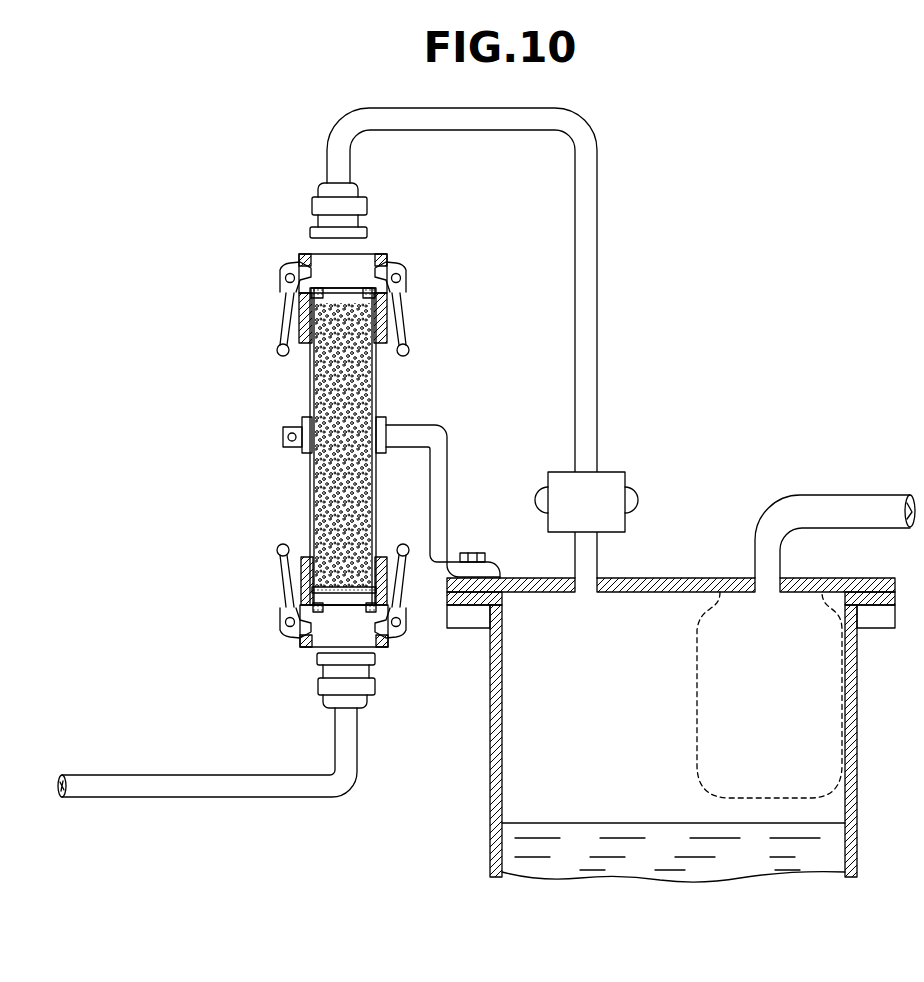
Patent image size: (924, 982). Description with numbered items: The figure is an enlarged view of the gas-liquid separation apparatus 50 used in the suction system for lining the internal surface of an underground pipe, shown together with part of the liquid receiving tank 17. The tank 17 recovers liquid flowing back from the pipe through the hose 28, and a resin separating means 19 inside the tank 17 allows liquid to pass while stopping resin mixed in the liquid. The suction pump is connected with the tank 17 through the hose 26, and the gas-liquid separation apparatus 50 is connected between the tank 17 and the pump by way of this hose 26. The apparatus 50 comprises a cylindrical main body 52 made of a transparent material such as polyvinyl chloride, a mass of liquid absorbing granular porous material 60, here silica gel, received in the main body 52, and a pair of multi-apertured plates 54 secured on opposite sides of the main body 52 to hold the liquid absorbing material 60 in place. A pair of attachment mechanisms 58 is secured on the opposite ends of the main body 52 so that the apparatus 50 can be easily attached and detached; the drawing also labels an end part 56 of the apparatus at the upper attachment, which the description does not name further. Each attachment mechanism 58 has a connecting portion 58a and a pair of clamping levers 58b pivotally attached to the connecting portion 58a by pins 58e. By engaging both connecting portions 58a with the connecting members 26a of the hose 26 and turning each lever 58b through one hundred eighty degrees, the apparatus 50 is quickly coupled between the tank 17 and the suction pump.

The liquid receiving tank 17 is at (677, 577).
The resin separating means 19 is at (827, 728).
The hose 26 is at (588, 200).
The connecting member 26a is at (312, 230).
The hose 28 is at (872, 505).
The gas-liquid separation apparatus 50 is at (203, 380).
The cylindrical main body 52 is at (295, 446).
The multi-apertured plate 54 is at (313, 335).
The coupling sleeve 56 is at (337, 290).
The attachment mechanism 58 is at (429, 462).
The connecting portion 58a is at (358, 268).
The clamping lever 58b is at (403, 322).
The pin 58e is at (400, 278).
The liquid absorbing granular porous material 60 is at (358, 383).